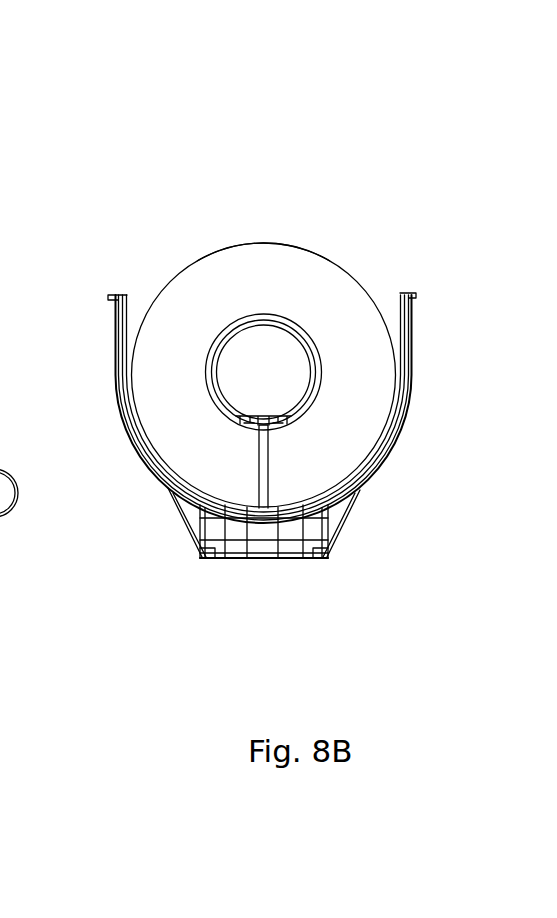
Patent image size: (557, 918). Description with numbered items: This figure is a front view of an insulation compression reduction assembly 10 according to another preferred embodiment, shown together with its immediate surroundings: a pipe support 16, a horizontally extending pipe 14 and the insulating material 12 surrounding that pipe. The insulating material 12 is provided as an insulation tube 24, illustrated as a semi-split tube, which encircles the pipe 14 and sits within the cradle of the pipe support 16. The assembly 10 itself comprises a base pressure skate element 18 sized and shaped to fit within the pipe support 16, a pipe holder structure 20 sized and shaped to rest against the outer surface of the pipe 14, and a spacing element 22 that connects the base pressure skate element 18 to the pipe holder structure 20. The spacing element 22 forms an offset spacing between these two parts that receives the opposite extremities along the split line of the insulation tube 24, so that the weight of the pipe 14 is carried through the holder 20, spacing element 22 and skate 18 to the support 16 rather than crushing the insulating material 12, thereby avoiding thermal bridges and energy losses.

The insulation compression reduction assembly 10 is at (352, 229).
The insulating material 12 is at (330, 312).
The pipe 14 is at (317, 376).
The pipe support 16 is at (362, 493).
The base pressure skate element 18 is at (327, 513).
The pipe holder structure 20 is at (290, 420).
The spacing element 22 is at (268, 463).
The insulation tube 24 is at (268, 250).